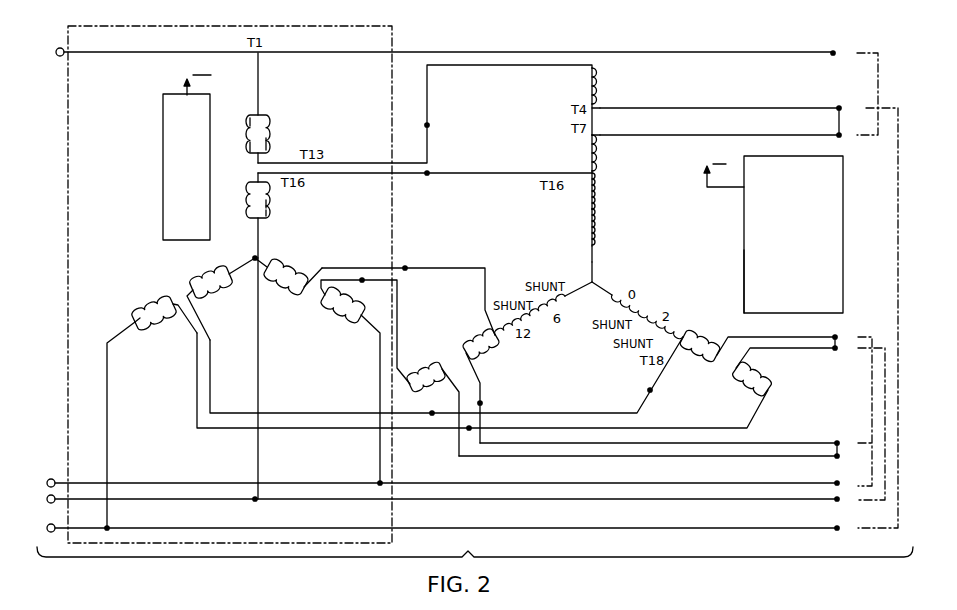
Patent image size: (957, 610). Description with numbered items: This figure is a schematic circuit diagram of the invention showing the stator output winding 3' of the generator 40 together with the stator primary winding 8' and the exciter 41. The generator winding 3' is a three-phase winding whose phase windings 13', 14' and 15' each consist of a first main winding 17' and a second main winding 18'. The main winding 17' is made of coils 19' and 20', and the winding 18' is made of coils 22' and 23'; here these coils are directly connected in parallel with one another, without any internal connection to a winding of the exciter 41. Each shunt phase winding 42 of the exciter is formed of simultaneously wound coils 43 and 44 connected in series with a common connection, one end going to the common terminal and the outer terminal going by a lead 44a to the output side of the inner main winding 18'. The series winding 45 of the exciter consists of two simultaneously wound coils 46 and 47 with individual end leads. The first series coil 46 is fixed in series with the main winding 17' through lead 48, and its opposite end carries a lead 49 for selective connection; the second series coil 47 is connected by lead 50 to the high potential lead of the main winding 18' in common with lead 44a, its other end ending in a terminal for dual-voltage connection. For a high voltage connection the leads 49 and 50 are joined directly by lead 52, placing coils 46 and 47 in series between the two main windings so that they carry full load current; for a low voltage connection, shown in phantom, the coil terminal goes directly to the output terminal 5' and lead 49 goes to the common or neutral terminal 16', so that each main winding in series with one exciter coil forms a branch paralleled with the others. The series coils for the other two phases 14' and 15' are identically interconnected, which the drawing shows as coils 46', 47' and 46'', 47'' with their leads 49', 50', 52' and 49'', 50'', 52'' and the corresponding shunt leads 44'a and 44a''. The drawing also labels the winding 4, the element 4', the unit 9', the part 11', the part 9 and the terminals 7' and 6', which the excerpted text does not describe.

The output terminal 5' is at (449, 67).
The field winding 4' is at (171, 150).
The phase winding 13' is at (271, 122).
The first main winding 17' is at (237, 109).
The coil 20' is at (290, 138).
The coil 19' is at (233, 151).
The coil 22' is at (246, 215).
The second main winding 18' is at (286, 201).
The coil 23' is at (284, 220).
The stator output winding 3' is at (290, 245).
The generator 40 is at (350, 109).
The exciter 41 is at (434, 226).
The lead 48 is at (503, 68).
The lead 44a is at (425, 158).
The series winding 45 is at (582, 94).
The first series coil 46 is at (619, 83).
The second series coil 47 is at (615, 156).
The lead 49 is at (732, 101).
The lead 50 is at (732, 130).
The lead 52 is at (812, 121).
The coil 43 is at (590, 208).
The shunt phase winding 42 is at (598, 214).
The stator primary winding 8' is at (554, 249).
The coil 44 is at (612, 258).
The rotor and rectifier 9' is at (779, 231).
The rectifier 11' is at (822, 242).
The rotor 9 is at (740, 281).
The stator winding 4 is at (213, 378).
The series winding 47' is at (341, 348).
The series winding 46' is at (278, 371).
The phase winding 14' is at (142, 412).
The phase winding 15' is at (336, 368).
The conductor 44'a is at (408, 289).
The conductor 44a'' is at (446, 376).
The series winding 47'' is at (698, 357).
The series winding 46'' is at (741, 382).
The conductor 50'' is at (789, 336).
The conductor 49'' is at (798, 362).
The jumper 52'' is at (828, 358).
The conductor 50' is at (670, 425).
The conductor 49' is at (661, 443).
The jumper 52' is at (812, 459).
The terminal 7' is at (455, 464).
The common terminal 16' is at (441, 492).
The terminal 6' is at (443, 524).